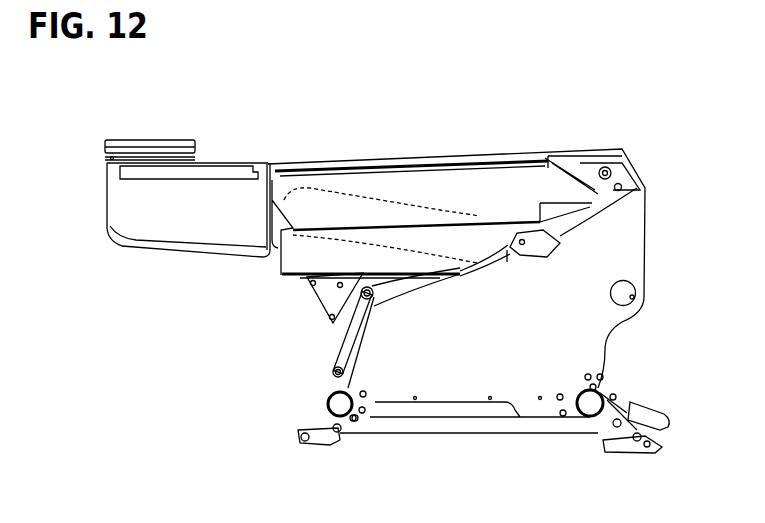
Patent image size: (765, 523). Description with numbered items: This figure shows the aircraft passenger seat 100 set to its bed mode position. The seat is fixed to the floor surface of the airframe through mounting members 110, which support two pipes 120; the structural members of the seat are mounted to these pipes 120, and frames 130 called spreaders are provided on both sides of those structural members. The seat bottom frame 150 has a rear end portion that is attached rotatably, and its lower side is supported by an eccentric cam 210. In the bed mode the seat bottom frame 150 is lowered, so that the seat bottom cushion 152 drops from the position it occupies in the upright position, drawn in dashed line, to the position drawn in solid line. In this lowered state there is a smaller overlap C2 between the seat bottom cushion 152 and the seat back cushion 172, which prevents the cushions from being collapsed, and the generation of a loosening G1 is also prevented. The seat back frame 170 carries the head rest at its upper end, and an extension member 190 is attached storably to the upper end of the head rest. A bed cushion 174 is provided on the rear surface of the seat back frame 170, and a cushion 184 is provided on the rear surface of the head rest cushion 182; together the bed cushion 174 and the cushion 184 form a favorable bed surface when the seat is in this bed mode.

The aircraft passenger seat 100 is at (376, 87).
The mounting members 110 is at (318, 443).
The pipes 120 is at (345, 425).
The frames (spreaders) 130 is at (578, 332).
The seat bottom frame 150 is at (330, 296).
The seat bottom cushion 152 is at (300, 200).
The seat back frame 170 is at (428, 162).
The seat back cushion 172 is at (460, 190).
The bed cushion 174 is at (511, 153).
The head rest cushion 182 is at (170, 225).
The cushion 184 is at (213, 180).
The extension member 190 is at (150, 140).
The eccentric cam 210 is at (352, 315).
The overlap C2 is at (318, 228).
The loosening G1 is at (93, 143).